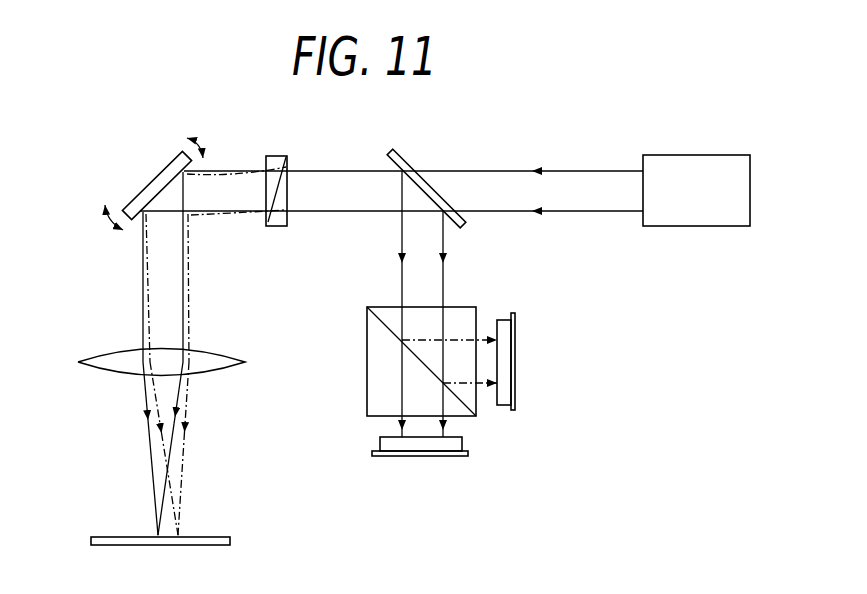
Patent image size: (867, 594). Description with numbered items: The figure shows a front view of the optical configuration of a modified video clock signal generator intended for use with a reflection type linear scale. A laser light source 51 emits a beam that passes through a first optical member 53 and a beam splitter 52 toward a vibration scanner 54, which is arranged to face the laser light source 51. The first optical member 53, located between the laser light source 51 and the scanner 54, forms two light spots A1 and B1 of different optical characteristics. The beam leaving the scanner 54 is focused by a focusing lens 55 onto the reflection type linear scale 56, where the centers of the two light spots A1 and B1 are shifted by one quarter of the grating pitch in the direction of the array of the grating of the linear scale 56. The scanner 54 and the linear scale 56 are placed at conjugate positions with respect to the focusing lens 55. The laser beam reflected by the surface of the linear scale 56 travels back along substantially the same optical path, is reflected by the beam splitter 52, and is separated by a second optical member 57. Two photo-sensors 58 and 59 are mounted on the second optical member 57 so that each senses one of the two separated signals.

The laser light source 51 is at (707, 155).
The beam splitter 52 is at (400, 153).
The first optical member 53 is at (277, 155).
The vibration scanner 54 is at (155, 175).
The focusing lens 55 is at (208, 350).
The reflection type linear scale 56 is at (103, 537).
The second optical member 57 is at (367, 333).
The photo-sensor 58 is at (468, 453).
The photo-sensor 59 is at (515, 325).
The light spot A1 is at (152, 528).
The light spot B1 is at (182, 527).